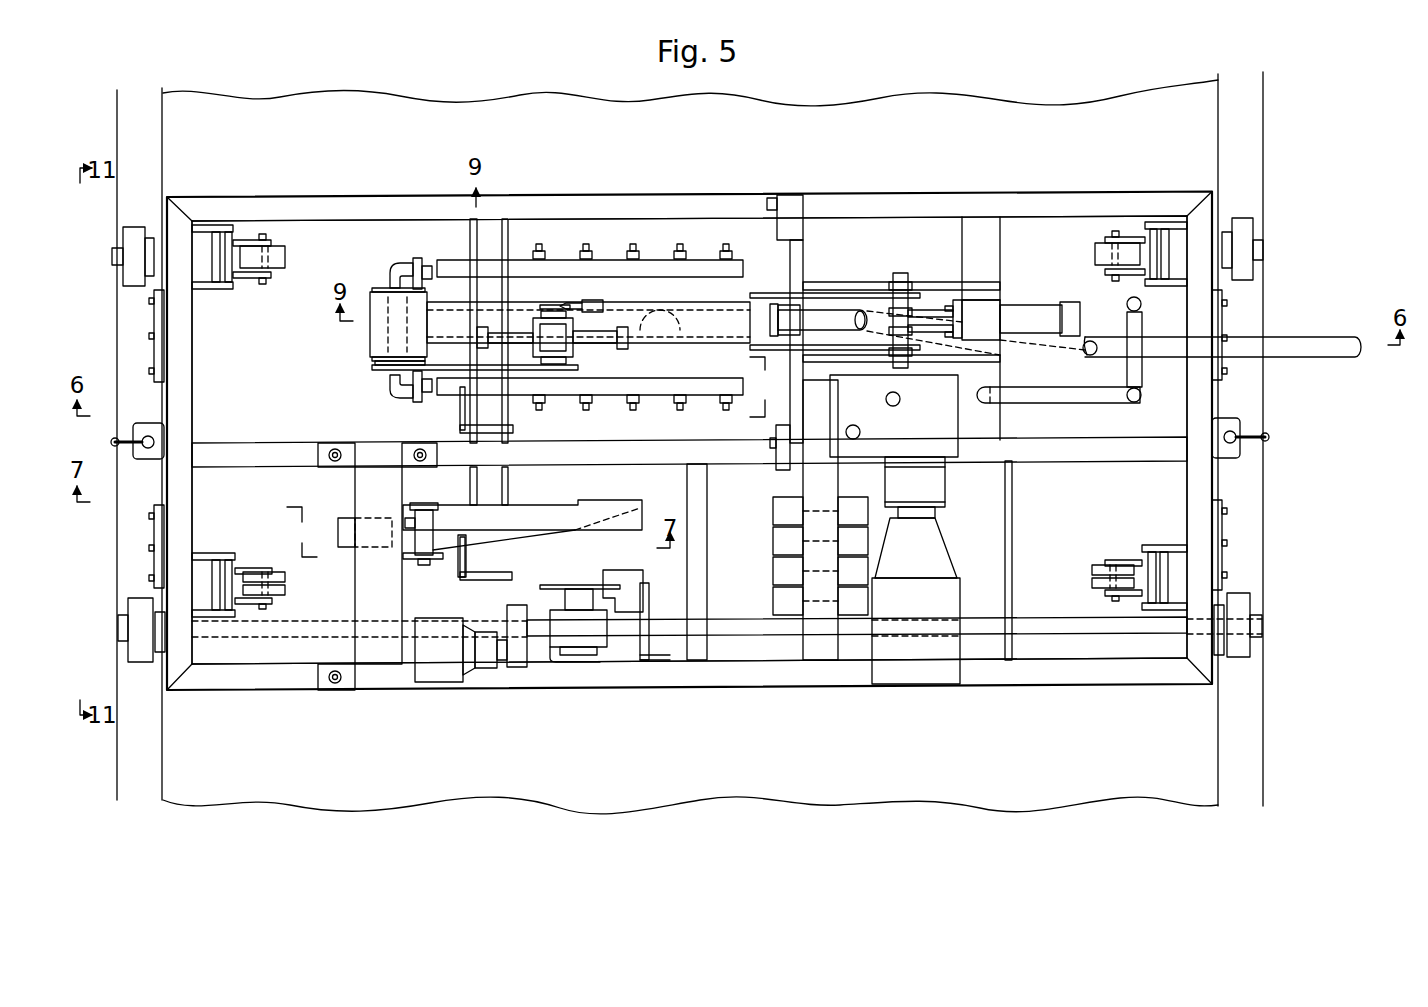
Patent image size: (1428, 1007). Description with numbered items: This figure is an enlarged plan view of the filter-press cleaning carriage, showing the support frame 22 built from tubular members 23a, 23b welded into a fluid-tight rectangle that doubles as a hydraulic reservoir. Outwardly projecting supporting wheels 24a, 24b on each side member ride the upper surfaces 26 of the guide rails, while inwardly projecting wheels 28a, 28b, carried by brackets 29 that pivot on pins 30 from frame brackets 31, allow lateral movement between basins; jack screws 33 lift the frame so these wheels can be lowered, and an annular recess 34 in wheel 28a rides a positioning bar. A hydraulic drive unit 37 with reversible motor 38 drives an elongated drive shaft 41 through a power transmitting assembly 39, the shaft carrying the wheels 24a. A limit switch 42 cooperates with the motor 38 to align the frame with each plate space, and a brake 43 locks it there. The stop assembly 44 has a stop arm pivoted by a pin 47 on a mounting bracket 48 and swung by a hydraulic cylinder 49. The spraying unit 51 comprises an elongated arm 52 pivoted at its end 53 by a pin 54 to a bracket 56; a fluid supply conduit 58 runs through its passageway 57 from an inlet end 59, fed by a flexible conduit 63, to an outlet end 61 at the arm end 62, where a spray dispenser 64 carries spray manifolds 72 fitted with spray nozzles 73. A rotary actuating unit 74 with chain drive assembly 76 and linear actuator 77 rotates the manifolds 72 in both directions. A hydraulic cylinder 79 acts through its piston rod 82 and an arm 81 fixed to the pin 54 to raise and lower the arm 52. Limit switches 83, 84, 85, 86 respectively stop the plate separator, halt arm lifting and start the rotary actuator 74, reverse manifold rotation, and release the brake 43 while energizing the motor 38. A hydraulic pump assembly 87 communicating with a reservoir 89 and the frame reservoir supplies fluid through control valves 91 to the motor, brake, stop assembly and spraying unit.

The support frame 22 is at (689, 417).
The tubular member 23a is at (180, 372).
The tubular member 23b is at (345, 207).
The supporting wheel 24a is at (130, 603).
The supporting wheel 24b is at (130, 236).
The upper surface of guide rail 26 is at (130, 330).
The inward wheel 28a is at (268, 597).
The inward wheel 28b is at (270, 268).
The bracket 29 is at (243, 246).
The pin 30 is at (233, 286).
The bracket 31 is at (209, 289).
The jack screw 33 is at (152, 440).
The annular recess 34 is at (287, 583).
The drive unit 37 is at (476, 672).
The hydraulic motor 38 is at (436, 678).
The power transmitting assembly 39 is at (515, 668).
The drive shaft 41 is at (722, 637).
The limit switch 42 is at (782, 196).
The brake 43 is at (580, 585).
The stop assembly 44 is at (562, 500).
The pin 47 is at (430, 504).
The mounting bracket 48 is at (410, 560).
The hydraulic cylinder 49 is at (338, 528).
The spraying unit 51 is at (353, 364).
The elongated arm 52 is at (662, 302).
The end of elongated arm 53 is at (865, 283).
The pin 54 is at (900, 273).
The bracket 56 is at (950, 300).
The passageway 57 is at (650, 338).
The fluid supply conduit 58 is at (770, 336).
The inlet end 59 is at (774, 304).
The outlet end 61 is at (437, 292).
The end of elongated arm 62 is at (436, 372).
The flexible fluid supply conduit 63 is at (1105, 336).
The spray dispenser 64 is at (378, 290).
The spray manifold 72 is at (606, 260).
The spray nozzle 73 is at (535, 250).
The rotary actuating unit 74 is at (553, 337).
The chain drive assembly 76 is at (378, 371).
The linear actuator 77 is at (590, 342).
The hydraulic cylinder 79 is at (1035, 307).
The arm 81 is at (914, 337).
The piston rod 82 is at (945, 337).
The limit switch 83 is at (776, 480).
The limit switch 84 is at (964, 300).
The limit switch 85 is at (592, 300).
The limit switch 86 is at (500, 572).
The hydraulic pump assembly 87 is at (950, 498).
The reservoir 89 is at (958, 453).
The control valve 91 is at (773, 600).